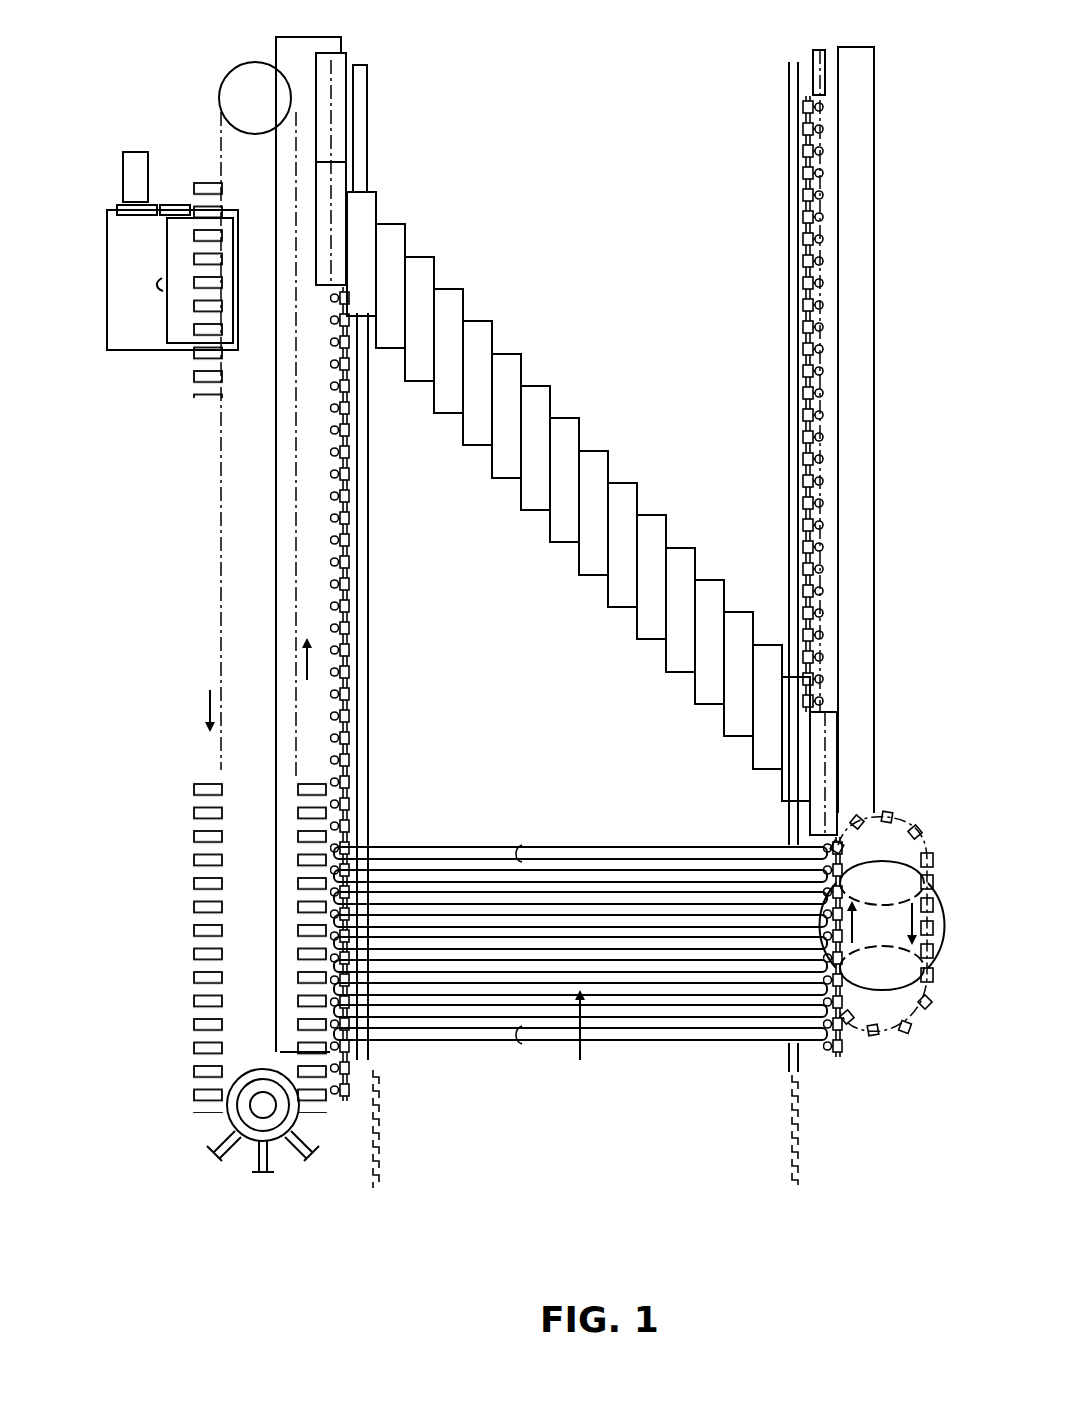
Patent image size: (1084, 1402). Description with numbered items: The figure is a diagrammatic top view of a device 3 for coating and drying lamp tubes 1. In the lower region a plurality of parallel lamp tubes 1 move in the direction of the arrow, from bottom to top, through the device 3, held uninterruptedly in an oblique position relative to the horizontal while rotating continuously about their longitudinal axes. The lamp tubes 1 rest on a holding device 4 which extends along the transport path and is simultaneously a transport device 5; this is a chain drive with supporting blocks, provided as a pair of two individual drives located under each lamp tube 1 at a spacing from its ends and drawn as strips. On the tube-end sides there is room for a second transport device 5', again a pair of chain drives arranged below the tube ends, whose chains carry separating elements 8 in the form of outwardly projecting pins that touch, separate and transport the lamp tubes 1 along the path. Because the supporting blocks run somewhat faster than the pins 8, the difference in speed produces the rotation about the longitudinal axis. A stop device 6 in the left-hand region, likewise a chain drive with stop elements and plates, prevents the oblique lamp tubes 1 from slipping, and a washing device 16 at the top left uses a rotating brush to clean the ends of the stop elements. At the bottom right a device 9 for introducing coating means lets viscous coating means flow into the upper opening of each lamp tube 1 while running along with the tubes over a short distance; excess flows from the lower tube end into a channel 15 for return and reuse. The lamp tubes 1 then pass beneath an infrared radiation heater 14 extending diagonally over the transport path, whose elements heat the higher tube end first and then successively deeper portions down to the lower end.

The lamp tube 1 is at (585, 852).
The device for coating and drying lamp tubes 3 is at (205, 1215).
The holding device 4 is at (368, 702).
The transport device 5 is at (769, 559).
The second transport device 5' is at (570, 167).
The stop device 6 is at (221, 632).
The separating elements 8 is at (333, 497).
The device for introducing coating means 9 is at (897, 1002).
The infrared radiation heater 14 is at (538, 408).
The channel 15 is at (298, 53).
The washing device 16 is at (140, 327).